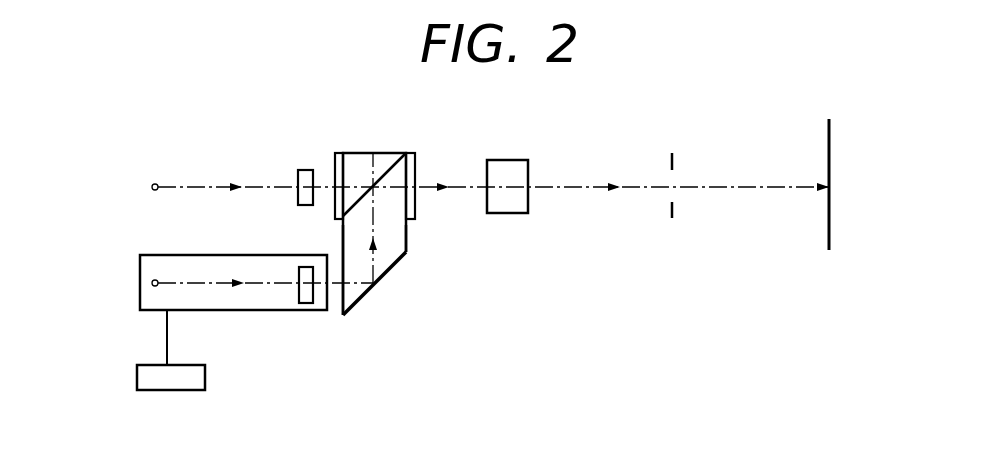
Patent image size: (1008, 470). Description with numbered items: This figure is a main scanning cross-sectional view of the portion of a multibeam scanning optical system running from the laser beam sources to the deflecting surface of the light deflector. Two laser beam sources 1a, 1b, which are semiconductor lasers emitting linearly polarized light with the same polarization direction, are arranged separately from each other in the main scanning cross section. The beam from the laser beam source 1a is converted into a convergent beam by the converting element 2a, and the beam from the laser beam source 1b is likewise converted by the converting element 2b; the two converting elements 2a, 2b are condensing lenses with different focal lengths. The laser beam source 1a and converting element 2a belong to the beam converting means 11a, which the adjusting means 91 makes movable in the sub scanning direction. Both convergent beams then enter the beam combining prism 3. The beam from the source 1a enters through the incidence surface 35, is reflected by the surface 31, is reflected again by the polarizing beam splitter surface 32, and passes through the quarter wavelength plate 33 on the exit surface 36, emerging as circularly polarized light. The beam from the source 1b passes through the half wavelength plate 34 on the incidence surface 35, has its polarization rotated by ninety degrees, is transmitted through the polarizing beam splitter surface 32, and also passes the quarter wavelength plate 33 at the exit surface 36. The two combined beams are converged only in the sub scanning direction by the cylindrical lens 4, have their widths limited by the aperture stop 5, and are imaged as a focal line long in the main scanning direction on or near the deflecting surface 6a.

The laser beam source 1a is at (150, 283).
The laser beam source 1b is at (150, 187).
The beam converting means 11a is at (140, 302).
The converting element 2a is at (306, 304).
The converting element 2b is at (305, 168).
The beam combining prism 3 is at (391, 227).
The surface 31 is at (374, 291).
The polarizing beam splitter surface 32 is at (393, 166).
The quarter wavelength plate 33 is at (415, 172).
The half wavelength plate 34 is at (337, 162).
The incidence surface 35 is at (344, 305).
The exit surface 36 is at (410, 245).
The cylindrical lens 4 is at (508, 165).
The aperture stop 5 is at (673, 160).
The deflecting surface 6a is at (831, 127).
The adjusting means 91 is at (162, 392).